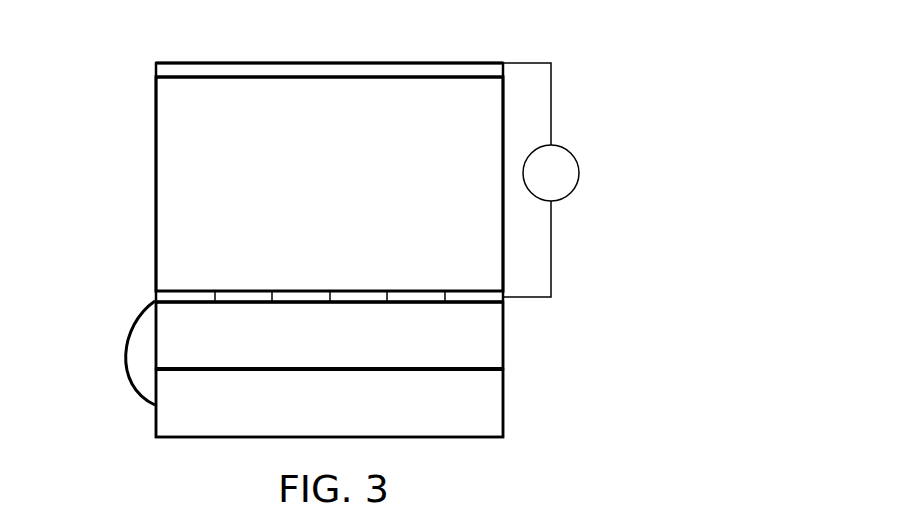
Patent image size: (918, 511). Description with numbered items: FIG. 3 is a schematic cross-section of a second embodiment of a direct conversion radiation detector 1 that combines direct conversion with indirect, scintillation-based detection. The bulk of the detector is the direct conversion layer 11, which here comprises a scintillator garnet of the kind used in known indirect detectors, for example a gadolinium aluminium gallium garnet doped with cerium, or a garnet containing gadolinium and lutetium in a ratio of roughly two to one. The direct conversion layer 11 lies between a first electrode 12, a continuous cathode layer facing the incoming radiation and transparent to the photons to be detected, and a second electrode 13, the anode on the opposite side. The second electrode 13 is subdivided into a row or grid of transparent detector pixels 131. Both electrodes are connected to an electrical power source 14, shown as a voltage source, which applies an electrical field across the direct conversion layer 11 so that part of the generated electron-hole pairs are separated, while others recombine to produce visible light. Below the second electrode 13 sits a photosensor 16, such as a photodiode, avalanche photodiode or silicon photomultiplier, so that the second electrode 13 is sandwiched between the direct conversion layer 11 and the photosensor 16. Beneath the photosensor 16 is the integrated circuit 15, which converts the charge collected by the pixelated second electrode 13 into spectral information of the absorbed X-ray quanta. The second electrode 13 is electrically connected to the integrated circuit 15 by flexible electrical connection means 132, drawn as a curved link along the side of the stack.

The direct conversion radiation detector 1 is at (522, 58).
The direct conversion layer 11 is at (163, 187).
The first electrode 12 is at (165, 72).
The second electrode 13 is at (154, 292).
The detector pixels 131 is at (301, 297).
The flexible electrical connection means 132 is at (124, 347).
The electrical power source 14 is at (579, 170).
The integrated circuit 15 is at (505, 402).
The photosensor 16 is at (505, 335).